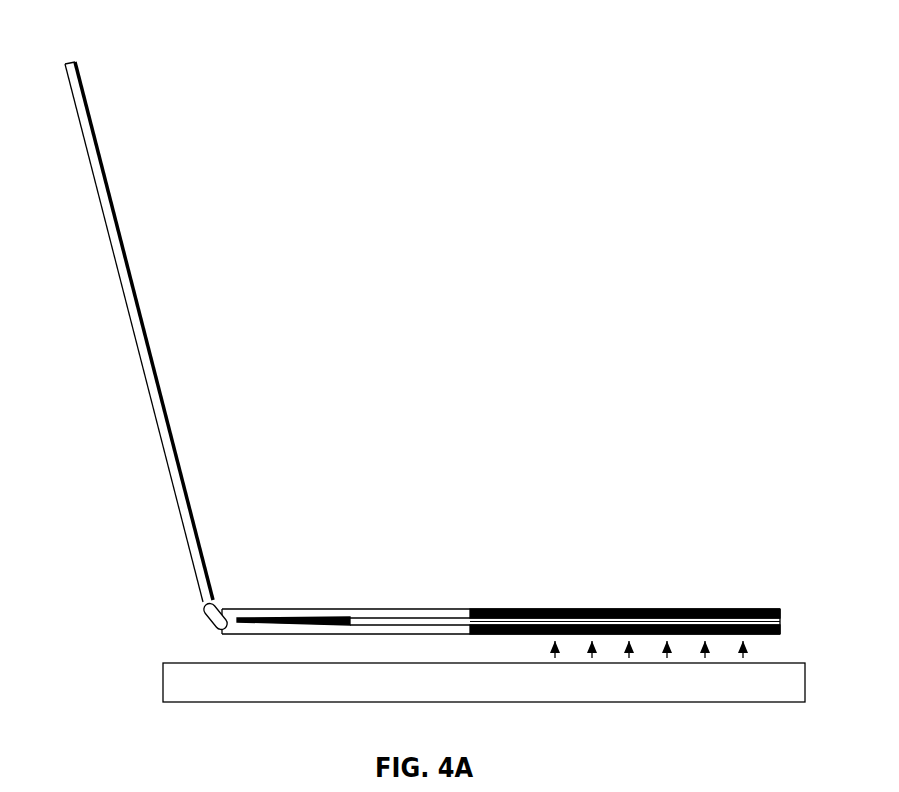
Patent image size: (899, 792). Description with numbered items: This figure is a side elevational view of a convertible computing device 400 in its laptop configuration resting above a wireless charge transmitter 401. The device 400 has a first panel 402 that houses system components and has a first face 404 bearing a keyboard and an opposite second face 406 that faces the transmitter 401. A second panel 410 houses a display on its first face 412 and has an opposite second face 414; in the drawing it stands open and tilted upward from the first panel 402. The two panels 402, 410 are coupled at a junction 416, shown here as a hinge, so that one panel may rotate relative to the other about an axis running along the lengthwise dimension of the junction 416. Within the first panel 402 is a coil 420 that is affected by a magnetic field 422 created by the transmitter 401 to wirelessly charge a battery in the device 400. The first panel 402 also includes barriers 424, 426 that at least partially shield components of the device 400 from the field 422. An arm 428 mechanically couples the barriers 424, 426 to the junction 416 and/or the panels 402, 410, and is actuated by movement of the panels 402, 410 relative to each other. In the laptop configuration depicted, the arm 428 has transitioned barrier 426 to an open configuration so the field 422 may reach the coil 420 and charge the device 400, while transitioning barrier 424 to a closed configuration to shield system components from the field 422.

The convertible computing device 400 is at (600, 207).
The wireless charge transmitter 401 is at (200, 699).
The first panel 402 is at (479, 618).
The first face 404 is at (280, 606).
The second face 406 is at (233, 637).
The second panel 410 is at (123, 332).
The first face 412 is at (122, 222).
The second face 414 is at (130, 342).
The junction 416 is at (205, 614).
The coil 420 is at (781, 620).
The magnetic field 422 is at (548, 648).
The barrier 424 is at (710, 607).
The barrier 426 is at (468, 631).
The arm 428 is at (342, 616).